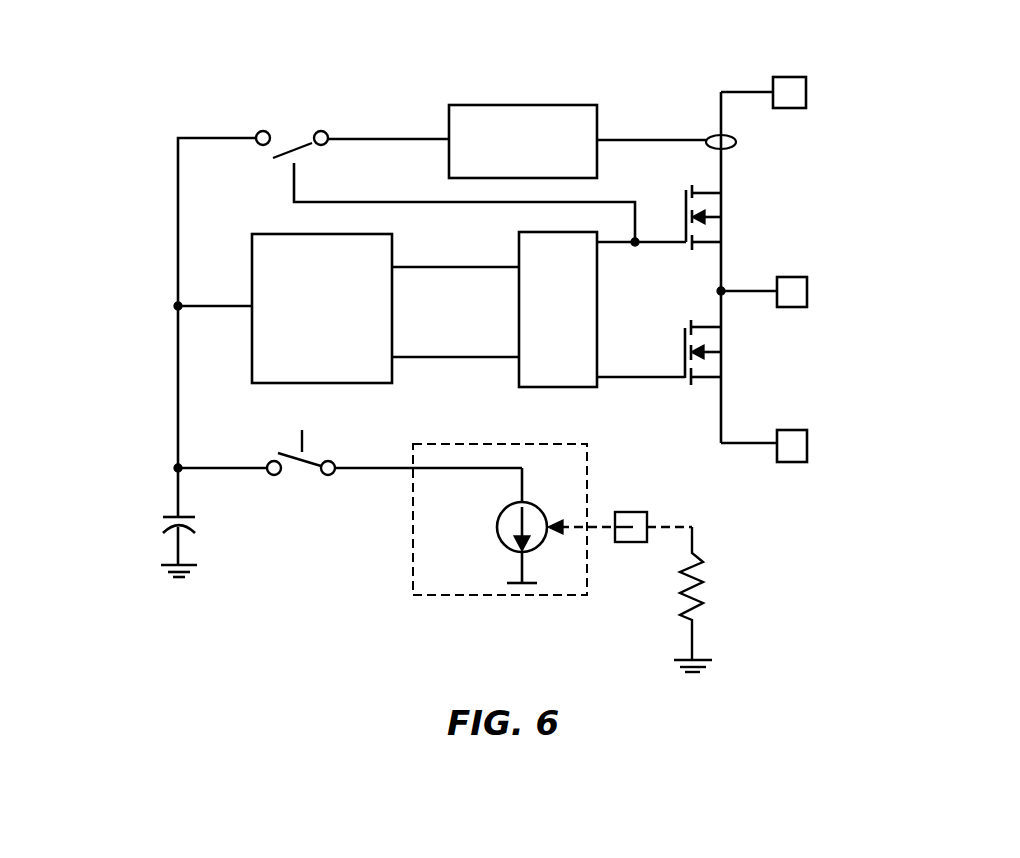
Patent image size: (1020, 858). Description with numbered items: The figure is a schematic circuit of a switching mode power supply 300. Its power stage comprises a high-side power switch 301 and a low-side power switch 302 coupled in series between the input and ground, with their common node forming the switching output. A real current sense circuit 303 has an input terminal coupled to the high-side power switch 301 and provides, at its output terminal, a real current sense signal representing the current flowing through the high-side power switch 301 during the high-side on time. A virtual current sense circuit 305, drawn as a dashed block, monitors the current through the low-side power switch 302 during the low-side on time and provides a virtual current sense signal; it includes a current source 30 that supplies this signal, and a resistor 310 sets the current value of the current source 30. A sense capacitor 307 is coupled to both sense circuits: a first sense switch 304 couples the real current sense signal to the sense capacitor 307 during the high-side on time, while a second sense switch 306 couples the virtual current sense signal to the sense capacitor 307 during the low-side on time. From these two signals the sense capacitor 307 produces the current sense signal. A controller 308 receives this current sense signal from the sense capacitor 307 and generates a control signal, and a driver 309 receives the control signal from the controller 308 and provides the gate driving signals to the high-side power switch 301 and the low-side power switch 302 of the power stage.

The switching mode power supply 300 is at (172, 111).
The high-side power switch 301 is at (727, 202).
The low-side power switch 302 is at (732, 352).
The real current sense circuit 303 is at (447, 155).
The first sense switch 304 is at (298, 131).
The virtual current sense circuit 305 is at (562, 600).
The second sense switch 306 is at (313, 478).
The sense capacitor 307 is at (198, 523).
The controller 308 is at (247, 247).
The driver 309 is at (515, 302).
The current source 30 is at (495, 532).
The resistor 310 is at (708, 583).